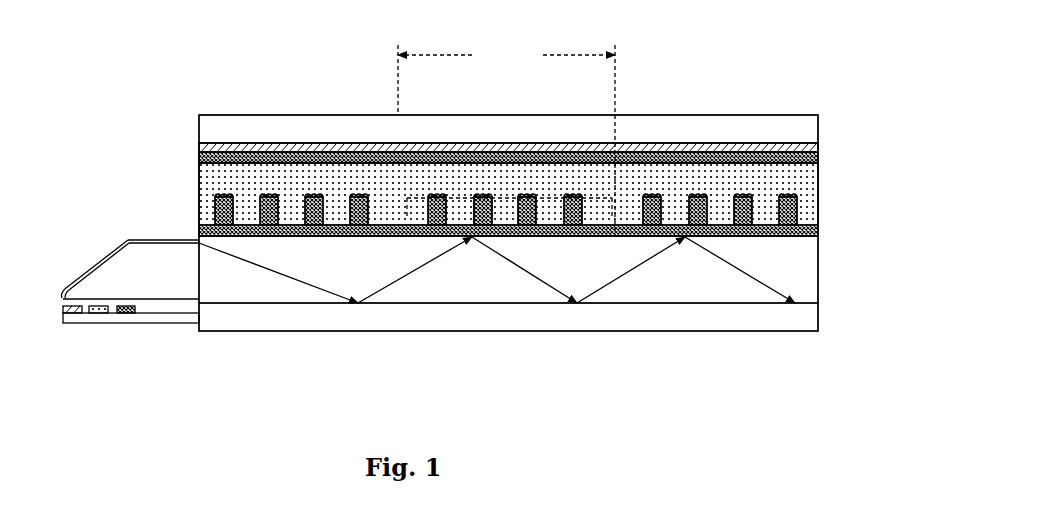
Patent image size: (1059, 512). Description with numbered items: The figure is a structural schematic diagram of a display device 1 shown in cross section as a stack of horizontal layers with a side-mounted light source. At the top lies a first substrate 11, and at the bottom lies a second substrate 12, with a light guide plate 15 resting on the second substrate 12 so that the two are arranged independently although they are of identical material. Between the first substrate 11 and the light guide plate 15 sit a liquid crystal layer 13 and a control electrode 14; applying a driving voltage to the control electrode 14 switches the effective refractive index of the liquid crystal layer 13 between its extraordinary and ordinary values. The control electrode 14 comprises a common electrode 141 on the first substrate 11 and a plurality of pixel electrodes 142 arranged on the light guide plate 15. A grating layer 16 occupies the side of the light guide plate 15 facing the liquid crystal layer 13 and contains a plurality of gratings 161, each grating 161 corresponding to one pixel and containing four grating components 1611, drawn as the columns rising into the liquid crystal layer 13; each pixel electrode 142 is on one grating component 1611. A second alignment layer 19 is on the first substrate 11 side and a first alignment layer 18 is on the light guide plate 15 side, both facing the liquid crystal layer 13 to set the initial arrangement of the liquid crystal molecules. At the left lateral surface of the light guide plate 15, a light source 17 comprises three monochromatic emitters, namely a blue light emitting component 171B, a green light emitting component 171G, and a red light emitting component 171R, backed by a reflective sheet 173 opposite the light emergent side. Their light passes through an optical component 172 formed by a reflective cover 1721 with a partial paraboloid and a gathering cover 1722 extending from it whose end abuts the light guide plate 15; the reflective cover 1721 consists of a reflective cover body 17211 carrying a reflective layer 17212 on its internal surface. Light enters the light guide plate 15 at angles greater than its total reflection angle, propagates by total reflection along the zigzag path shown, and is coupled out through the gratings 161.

The display device 1 is at (163, 106).
The first substrate 11 is at (818, 130).
The second substrate 12 is at (805, 318).
The liquid crystal layer 13 is at (818, 216).
The control electrode 14 is at (895, 143).
The common electrode 141 is at (818, 152).
The pixel electrodes 142 is at (803, 195).
The light guide plate 15 is at (805, 275).
The grating layer 16 is at (215, 200).
The grating 161 is at (593, 196).
The grating components 1611 is at (571, 196).
The light source 17 is at (102, 278).
The blue light emitting component 171B is at (62, 313).
The green light emitting component 171G is at (95, 313).
The red light emitting component 171R is at (125, 313).
The optical component 172 is at (118, 245).
The reflective cover 1721 is at (88, 258).
The reflective cover body 17211 is at (68, 277).
The reflective layer 17212 is at (115, 252).
The gathering cover 1722 is at (153, 236).
The reflective sheet 173 is at (165, 323).
The first alignment layer 18 is at (199, 230).
The second alignment layer 19 is at (199, 153).